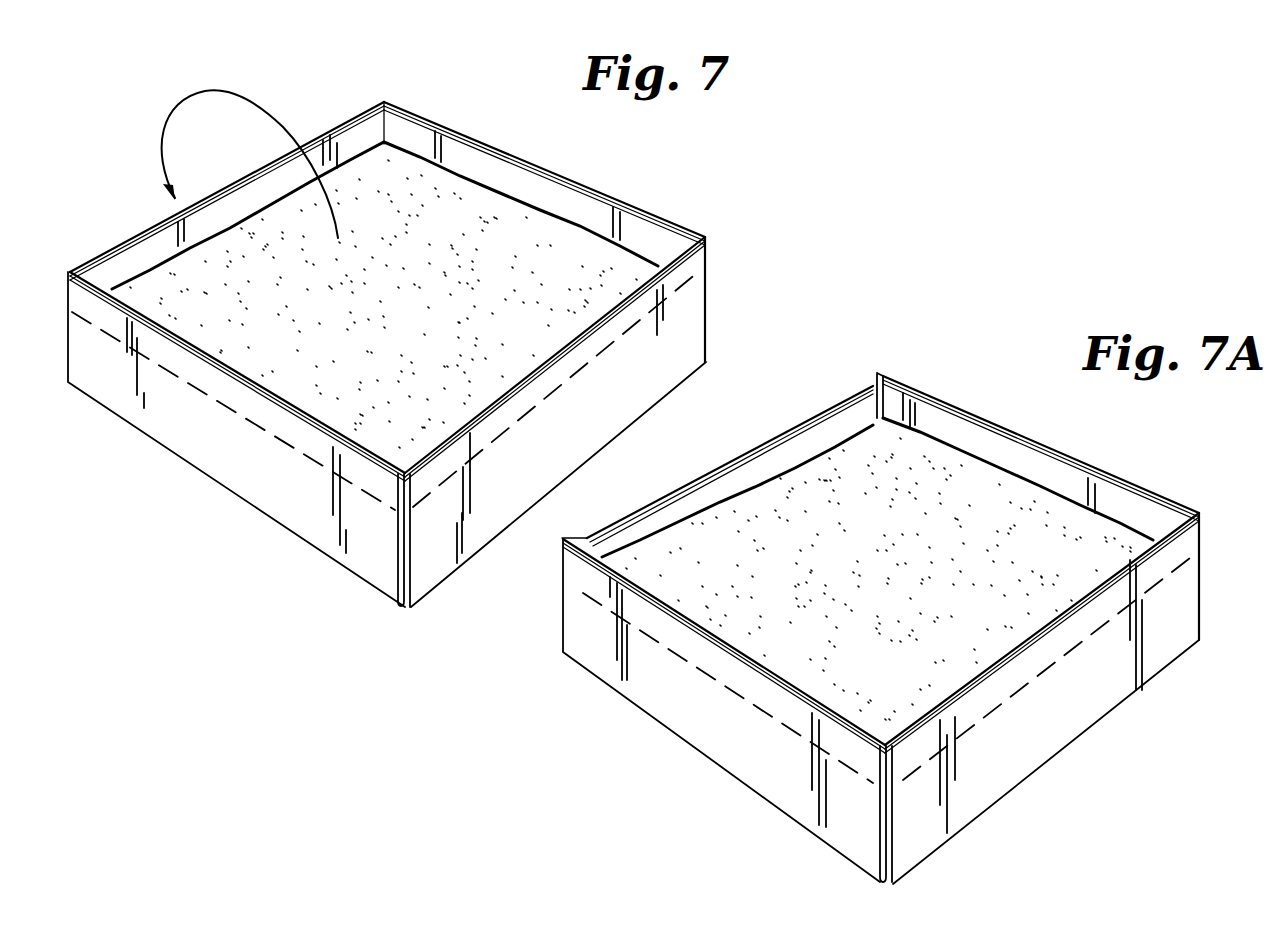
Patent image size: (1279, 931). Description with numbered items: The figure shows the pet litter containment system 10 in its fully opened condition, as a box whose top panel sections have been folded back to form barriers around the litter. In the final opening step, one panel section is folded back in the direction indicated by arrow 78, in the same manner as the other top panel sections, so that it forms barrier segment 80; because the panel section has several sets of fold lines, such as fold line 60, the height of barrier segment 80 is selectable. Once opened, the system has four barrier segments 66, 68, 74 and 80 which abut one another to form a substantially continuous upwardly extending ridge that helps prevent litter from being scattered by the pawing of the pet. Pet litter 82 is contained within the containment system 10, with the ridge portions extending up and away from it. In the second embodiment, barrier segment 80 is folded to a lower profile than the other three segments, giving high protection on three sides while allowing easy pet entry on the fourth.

In FIG. 7, the pet litter containment system 10 is at (652, 165).
In FIG. 7A, the pet litter containment system 10 is at (836, 373).
In FIG. 7, the fold line 60 is at (668, 313).
In FIG. 7A, the fold line 60 is at (800, 737).
In FIG. 7, the barrier segment 66 is at (357, 452).
In FIG. 7A, the barrier segment 66 is at (770, 663).
In FIG. 7, the barrier segment 68 is at (642, 228).
In FIG. 7A, the barrier segment 68 is at (1128, 503).
In FIG. 7, the barrier segment 74 is at (530, 372).
In FIG. 7A, the barrier segment 74 is at (962, 681).
In FIG. 7, the arrow 78 is at (238, 93).
In FIG. 7, the barrier segment 80 is at (147, 247).
In FIG. 7A, the barrier segment 80 is at (743, 478).
In FIG. 7, the pet litter 82 is at (458, 208).
In FIG. 7A, the pet litter 82 is at (1028, 508).